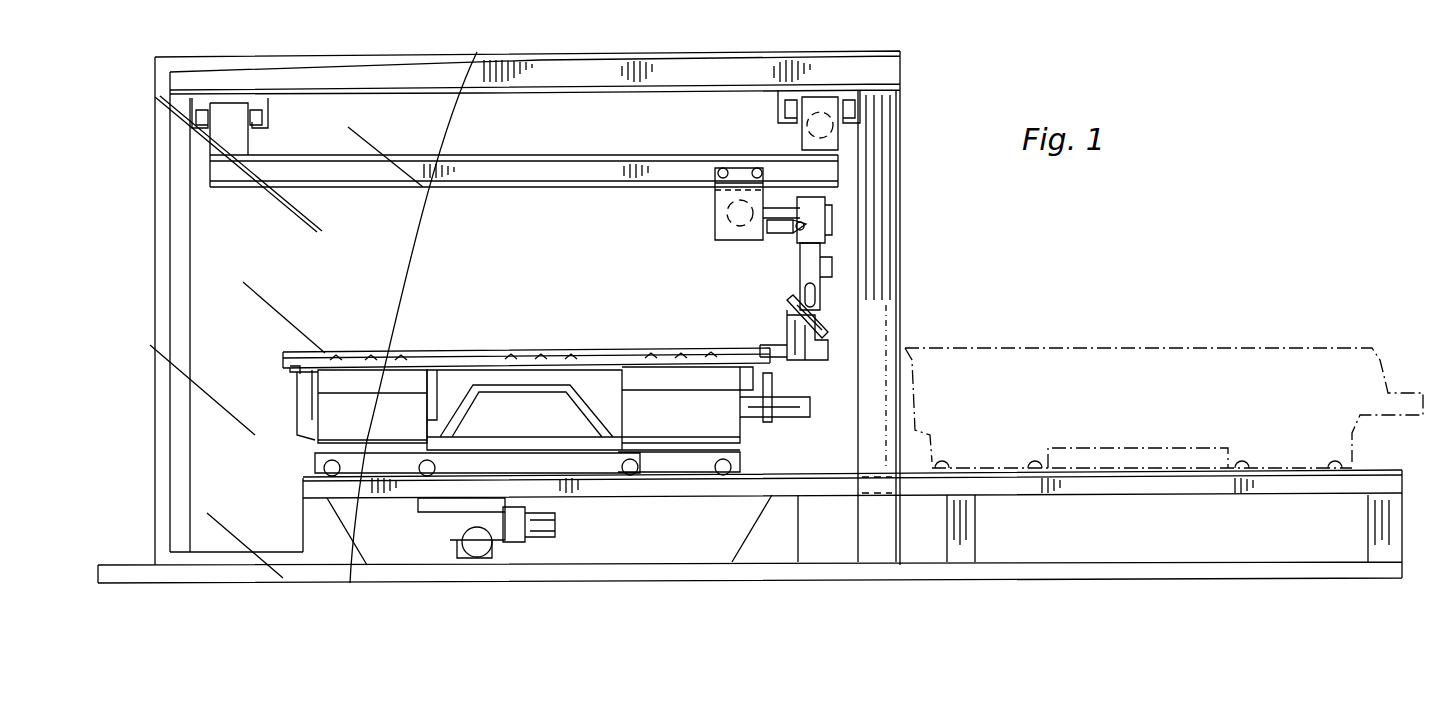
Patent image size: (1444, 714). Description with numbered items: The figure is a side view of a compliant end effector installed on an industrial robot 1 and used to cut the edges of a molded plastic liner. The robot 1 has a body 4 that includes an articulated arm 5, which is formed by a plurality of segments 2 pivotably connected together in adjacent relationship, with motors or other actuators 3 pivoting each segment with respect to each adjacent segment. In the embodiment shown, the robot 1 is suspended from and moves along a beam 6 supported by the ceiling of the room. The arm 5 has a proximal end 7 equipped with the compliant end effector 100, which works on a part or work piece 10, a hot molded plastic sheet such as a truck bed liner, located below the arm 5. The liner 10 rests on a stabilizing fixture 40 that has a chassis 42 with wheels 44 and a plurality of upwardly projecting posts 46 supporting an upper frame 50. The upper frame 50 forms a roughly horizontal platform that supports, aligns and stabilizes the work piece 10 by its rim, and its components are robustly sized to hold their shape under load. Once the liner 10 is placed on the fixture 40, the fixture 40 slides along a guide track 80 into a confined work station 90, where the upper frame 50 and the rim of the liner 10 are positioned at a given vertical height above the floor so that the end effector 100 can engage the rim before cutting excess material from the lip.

The industrial robot 1 is at (698, 230).
The segments 2 is at (800, 264).
The motors or other actuators 3 is at (765, 262).
The body 4 is at (715, 200).
The articulated arm 5 is at (846, 231).
The beam 6 is at (598, 153).
The proximal end 7 is at (820, 307).
The work piece 10 is at (608, 350).
The stabilizing fixture 40 is at (752, 442).
The chassis 42 is at (318, 449).
The wheels 44 is at (330, 476).
The upwardly projecting posts 46 is at (315, 378).
The upper frame 50 is at (285, 370).
The guide track 80 is at (325, 492).
The confined work station 90 is at (592, 276).
The compliant end effector 100 is at (814, 368).